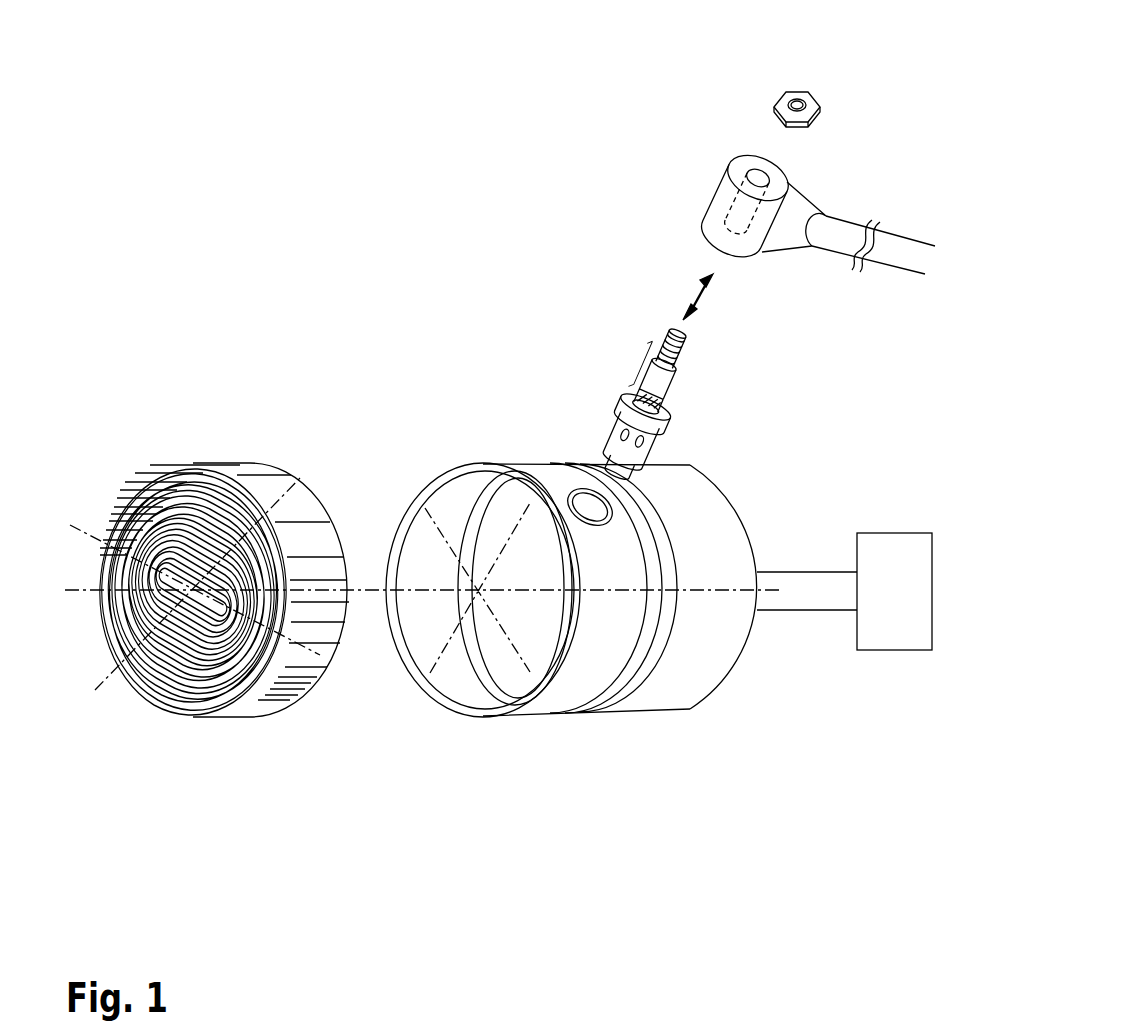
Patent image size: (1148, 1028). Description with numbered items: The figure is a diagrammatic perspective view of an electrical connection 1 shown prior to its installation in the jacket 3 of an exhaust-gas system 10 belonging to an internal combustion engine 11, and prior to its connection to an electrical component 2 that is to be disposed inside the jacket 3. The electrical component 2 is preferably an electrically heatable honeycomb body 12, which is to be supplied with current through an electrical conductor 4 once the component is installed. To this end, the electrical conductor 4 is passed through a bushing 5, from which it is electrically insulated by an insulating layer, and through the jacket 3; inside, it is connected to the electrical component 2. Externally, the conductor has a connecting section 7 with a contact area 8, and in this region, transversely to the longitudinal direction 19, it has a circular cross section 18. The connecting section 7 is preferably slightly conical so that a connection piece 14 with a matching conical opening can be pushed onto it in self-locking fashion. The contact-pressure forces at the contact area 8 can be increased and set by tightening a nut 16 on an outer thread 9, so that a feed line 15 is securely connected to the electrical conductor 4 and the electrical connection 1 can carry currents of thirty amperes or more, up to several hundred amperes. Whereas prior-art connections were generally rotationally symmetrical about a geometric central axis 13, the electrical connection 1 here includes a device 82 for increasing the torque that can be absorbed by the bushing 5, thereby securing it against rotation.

The electrical connection 1 is at (678, 377).
The electrical component 2 is at (263, 497).
The jacket 3 is at (567, 673).
The electrical conductor 4 is at (671, 347).
The bushing 5 is at (642, 414).
The connecting section 7 is at (640, 364).
The contact area 8 is at (648, 400).
The outer thread 9 is at (658, 377).
The exhaust-gas system 10 is at (798, 583).
The internal combustion engine 11 is at (892, 542).
The electrically heatable honeycomb body 12 is at (215, 693).
The geometric central axis 13 is at (627, 448).
The connection piece 14 is at (782, 178).
The feed line 15 is at (848, 235).
The nut 16 is at (808, 90).
The circular cross section 18 is at (649, 401).
The longitudinal direction 19 is at (690, 297).
The device for increasing the torque 82 is at (690, 457).